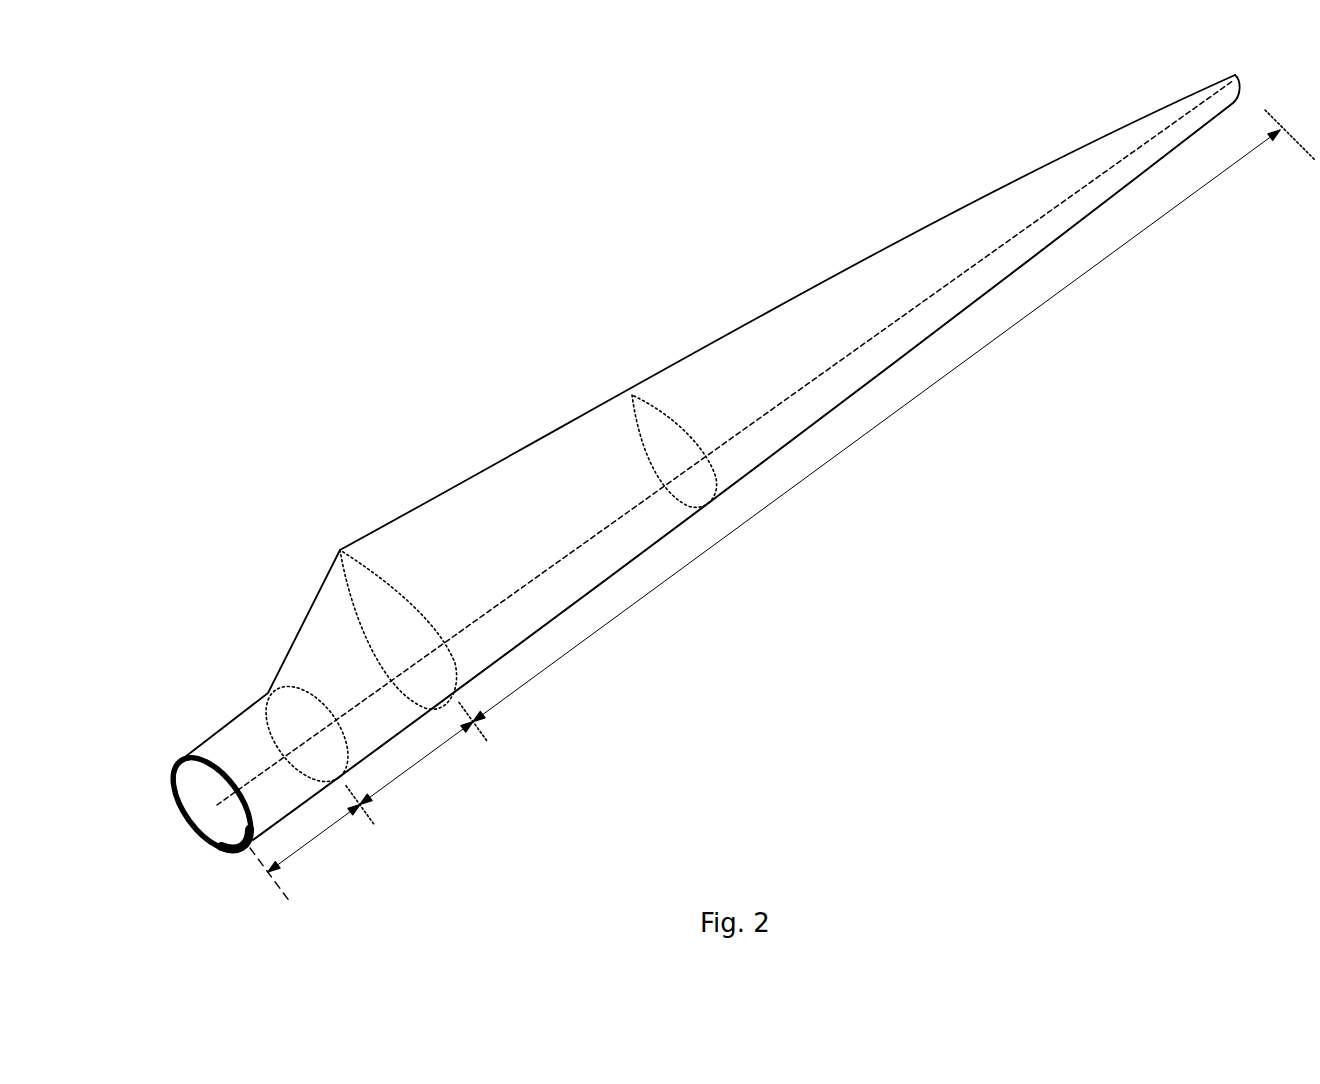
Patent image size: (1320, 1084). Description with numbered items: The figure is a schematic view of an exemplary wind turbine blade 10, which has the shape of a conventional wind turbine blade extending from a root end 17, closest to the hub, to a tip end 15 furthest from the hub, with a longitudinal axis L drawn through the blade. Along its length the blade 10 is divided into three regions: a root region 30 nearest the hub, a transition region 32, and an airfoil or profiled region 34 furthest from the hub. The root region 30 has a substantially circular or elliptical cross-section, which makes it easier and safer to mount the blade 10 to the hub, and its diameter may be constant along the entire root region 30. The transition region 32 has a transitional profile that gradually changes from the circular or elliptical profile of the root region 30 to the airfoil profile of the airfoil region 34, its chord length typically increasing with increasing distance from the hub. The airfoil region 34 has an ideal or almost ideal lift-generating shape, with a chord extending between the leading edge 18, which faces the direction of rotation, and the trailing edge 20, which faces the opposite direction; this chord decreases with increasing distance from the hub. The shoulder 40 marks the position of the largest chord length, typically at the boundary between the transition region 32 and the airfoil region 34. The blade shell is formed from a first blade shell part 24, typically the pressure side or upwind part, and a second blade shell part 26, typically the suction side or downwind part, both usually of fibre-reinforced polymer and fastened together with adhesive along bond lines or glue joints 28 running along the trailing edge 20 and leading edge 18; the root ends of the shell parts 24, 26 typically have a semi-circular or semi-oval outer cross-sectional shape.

The wind turbine blade 10 is at (500, 314).
The tip end 15 is at (1235, 75).
The root end 17 is at (190, 772).
The leading edge 18 is at (917, 347).
The trailing edge 20 is at (799, 302).
The first blade shell part 24 is at (197, 758).
The second blade shell part 26 is at (220, 838).
The bond lines or glue joints 28 is at (180, 762).
The root region 30 is at (318, 840).
The transition region 32 is at (422, 760).
The airfoil region 34 is at (800, 483).
The shoulder 40 is at (340, 550).
The longitudinal axis L is at (222, 800).